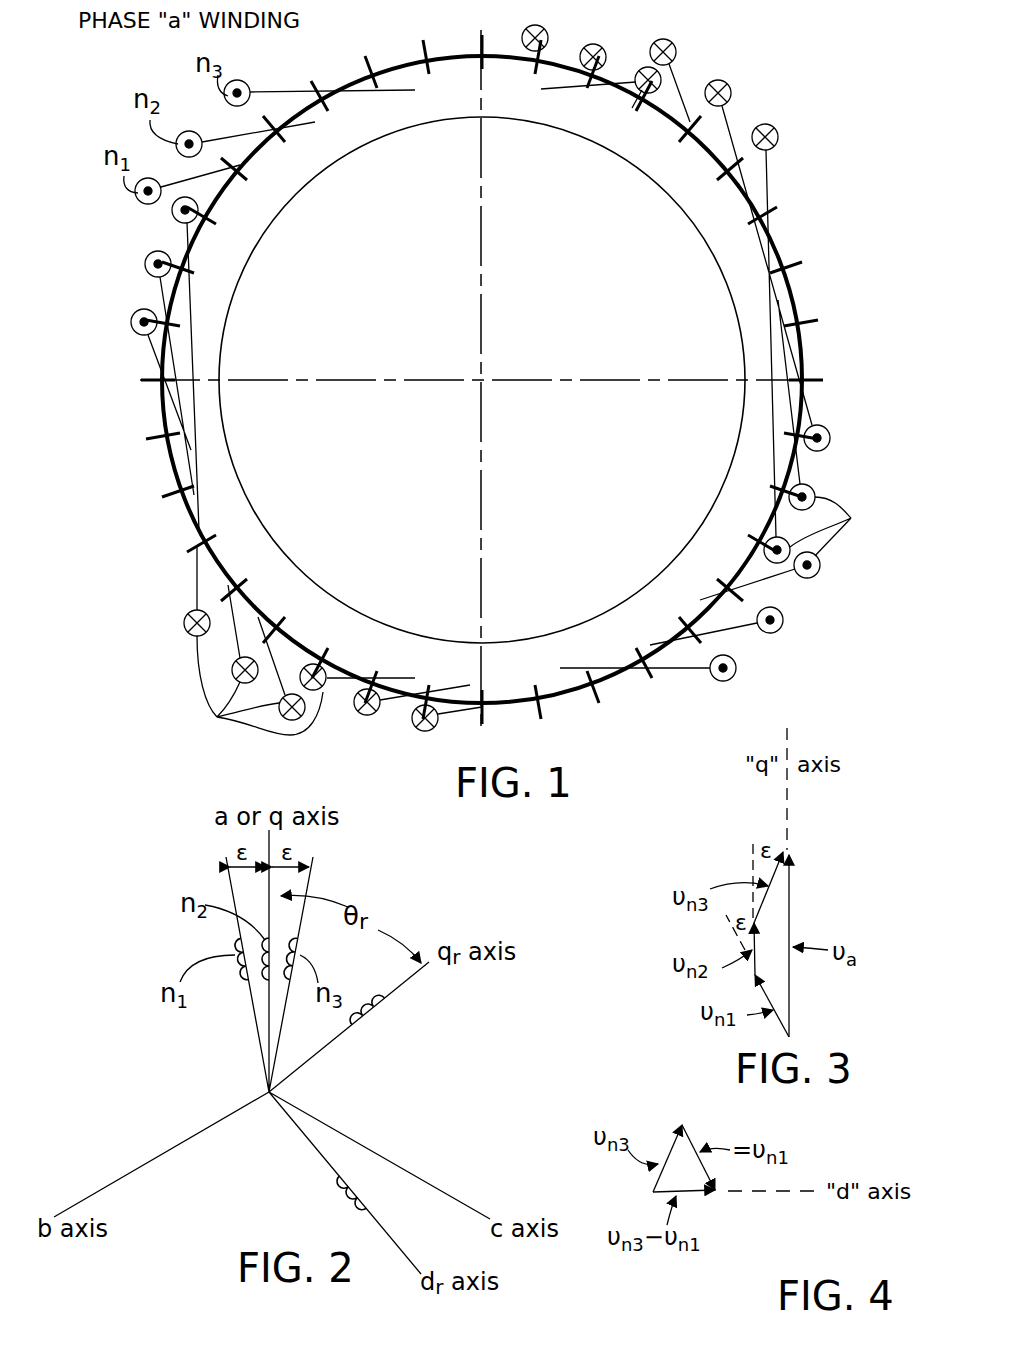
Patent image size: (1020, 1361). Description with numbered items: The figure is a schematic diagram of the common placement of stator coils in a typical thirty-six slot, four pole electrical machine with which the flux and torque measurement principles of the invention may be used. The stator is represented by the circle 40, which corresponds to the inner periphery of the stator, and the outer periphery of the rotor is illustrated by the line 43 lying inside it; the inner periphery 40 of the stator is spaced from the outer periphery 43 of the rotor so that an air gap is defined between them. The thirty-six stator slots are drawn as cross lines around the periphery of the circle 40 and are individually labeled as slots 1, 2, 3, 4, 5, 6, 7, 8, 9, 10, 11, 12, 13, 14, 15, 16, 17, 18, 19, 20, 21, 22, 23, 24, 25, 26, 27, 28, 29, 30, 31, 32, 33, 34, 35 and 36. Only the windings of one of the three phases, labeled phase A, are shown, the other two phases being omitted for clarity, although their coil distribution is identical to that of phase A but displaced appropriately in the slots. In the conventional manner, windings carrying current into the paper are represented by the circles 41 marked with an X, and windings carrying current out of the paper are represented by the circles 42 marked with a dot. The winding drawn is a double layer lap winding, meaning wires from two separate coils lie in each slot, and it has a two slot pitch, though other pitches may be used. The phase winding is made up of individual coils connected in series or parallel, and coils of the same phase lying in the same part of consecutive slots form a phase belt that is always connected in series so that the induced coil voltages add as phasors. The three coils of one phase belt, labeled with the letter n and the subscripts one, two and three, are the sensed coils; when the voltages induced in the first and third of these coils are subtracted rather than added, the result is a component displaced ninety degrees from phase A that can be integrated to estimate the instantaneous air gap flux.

The slot 1 is at (536, 72).
The slot 2 is at (589, 86).
The slot 3 is at (637, 109).
The slot 4 is at (681, 141).
The slot 5 is at (723, 181).
The slot 6 is at (753, 225).
The slot 7 is at (778, 272).
The slot 8 is at (792, 328).
The slot 9 is at (795, 380).
The slot 10 is at (787, 433).
The slot 11 is at (772, 485).
The slot 12 is at (751, 534).
The slot 13 is at (720, 577).
The slot 14 is at (681, 618).
The slot 15 is at (600, 650).
The slot 16 is at (548, 667).
The slot 17 is at (497, 676).
The slot 18 is at (482, 694).
The slot 19 is at (468, 674).
The slot 20 is at (380, 673).
The slot 21 is at (330, 651).
The slot 22 is at (284, 619).
The slot 23 is at (247, 582).
The slot 24 is at (216, 536).
The slot 25 is at (188, 487).
The slot 26 is at (175, 437).
The slot 27 is at (172, 380).
The slot 28 is at (149, 323).
The slot 29 is at (163, 266).
The slot 30 is at (190, 212).
The slot 31 is at (243, 181).
The slot 32 is at (318, 134).
The slot 33 is at (366, 106).
The slot 34 is at (416, 99).
The slot 35 is at (525, 46).
The slot 36 is at (582, 62).
The circle 40 is at (612, 692).
The circles marked with an X 41 is at (253, 687).
The circles with a dot 42 is at (836, 526).
The line 43 is at (742, 395).